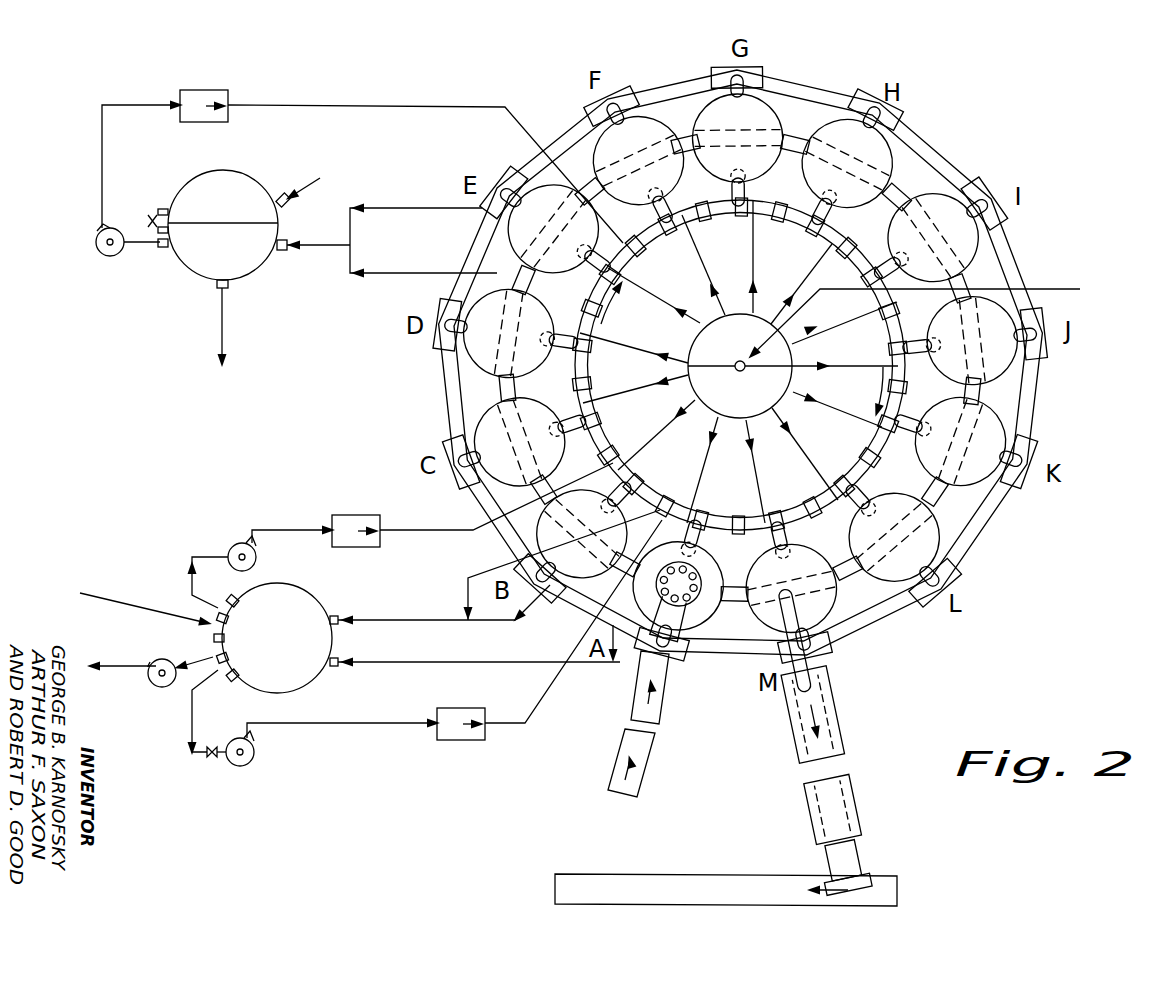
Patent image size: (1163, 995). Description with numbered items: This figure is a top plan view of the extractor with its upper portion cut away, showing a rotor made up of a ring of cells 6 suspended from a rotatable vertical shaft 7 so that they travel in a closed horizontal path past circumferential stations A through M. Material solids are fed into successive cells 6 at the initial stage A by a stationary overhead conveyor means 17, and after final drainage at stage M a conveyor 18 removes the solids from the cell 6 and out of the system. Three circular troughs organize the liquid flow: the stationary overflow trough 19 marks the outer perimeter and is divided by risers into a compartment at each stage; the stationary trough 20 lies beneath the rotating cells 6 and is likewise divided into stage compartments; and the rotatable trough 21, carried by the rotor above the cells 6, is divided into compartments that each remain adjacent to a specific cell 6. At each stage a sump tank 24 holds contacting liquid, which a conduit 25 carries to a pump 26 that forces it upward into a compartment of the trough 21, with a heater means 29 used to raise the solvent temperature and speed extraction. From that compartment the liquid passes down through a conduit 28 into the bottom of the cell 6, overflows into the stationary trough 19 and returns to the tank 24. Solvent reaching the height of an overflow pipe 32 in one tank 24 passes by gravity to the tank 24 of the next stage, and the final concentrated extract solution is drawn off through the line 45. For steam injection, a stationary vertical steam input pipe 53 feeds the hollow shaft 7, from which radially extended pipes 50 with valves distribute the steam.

The cell 6 is at (494, 402).
The rotatable vertical shaft 7 is at (708, 322).
The overhead conveyor means 17 is at (657, 740).
The conveyor 18 is at (840, 711).
The circular trough 19 is at (568, 128).
The trough 20 is at (596, 176).
The rotatable trough 21 is at (700, 214).
The sump tank 24 is at (232, 172).
The conduit 25 is at (102, 148).
The pump 26 is at (96, 242).
The conduit 28 is at (426, 178).
The heater means 29 is at (203, 90).
The overflow pipe 32 is at (156, 214).
The line 45 is at (192, 658).
The radially extended pipe 50 is at (826, 368).
The vertical steam input pipe 53 is at (1062, 289).